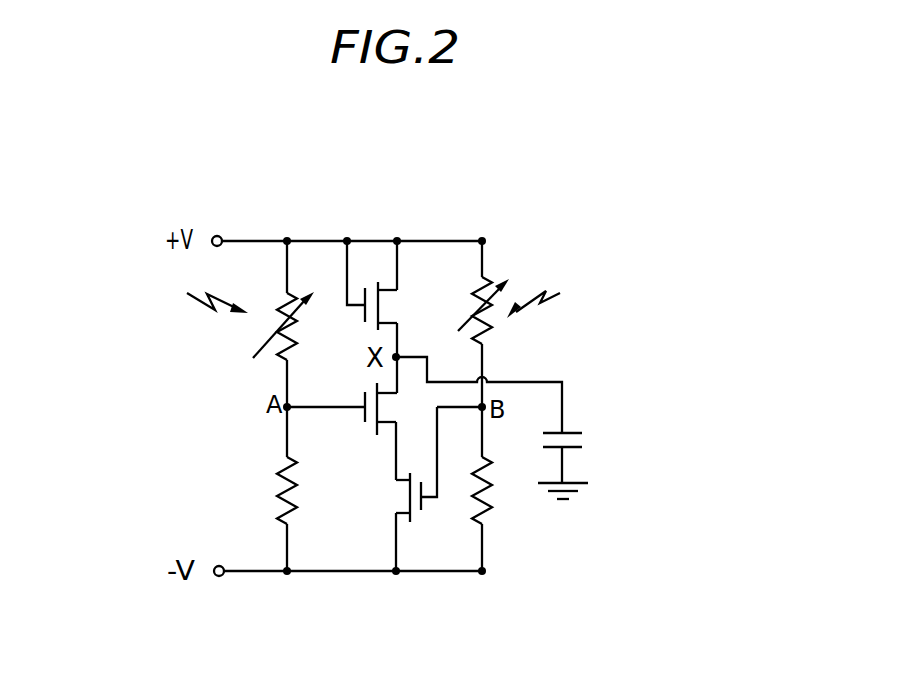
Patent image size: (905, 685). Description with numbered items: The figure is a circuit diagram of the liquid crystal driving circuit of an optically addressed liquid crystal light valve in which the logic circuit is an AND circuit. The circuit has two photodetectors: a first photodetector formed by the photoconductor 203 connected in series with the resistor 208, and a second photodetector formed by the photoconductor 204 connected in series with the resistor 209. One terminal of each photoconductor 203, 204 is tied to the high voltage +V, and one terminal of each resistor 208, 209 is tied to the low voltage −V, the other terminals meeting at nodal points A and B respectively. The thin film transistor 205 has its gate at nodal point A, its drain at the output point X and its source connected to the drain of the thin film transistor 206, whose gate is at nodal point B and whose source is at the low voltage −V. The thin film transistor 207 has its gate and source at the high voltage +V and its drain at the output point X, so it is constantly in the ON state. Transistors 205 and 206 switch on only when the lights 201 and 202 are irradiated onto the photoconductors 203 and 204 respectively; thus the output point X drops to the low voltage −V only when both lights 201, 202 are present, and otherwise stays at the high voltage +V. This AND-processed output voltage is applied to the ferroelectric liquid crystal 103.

The ferroelectric liquid crystal 103 is at (584, 438).
The light 201 is at (187, 293).
The light 202 is at (560, 293).
The photoconductor 203 is at (268, 331).
The photoconductor 204 is at (493, 330).
The thin film transistor 205 is at (358, 418).
The thin film transistor 206 is at (418, 523).
The thin film transistor 207 is at (373, 282).
The resistor 208 is at (273, 500).
The resistor 209 is at (497, 495).